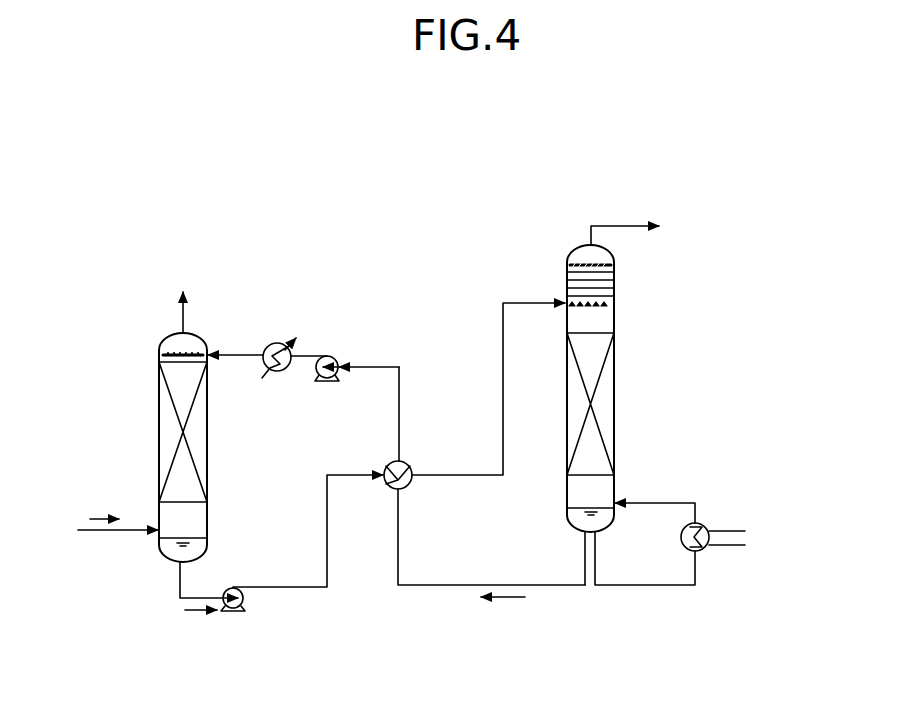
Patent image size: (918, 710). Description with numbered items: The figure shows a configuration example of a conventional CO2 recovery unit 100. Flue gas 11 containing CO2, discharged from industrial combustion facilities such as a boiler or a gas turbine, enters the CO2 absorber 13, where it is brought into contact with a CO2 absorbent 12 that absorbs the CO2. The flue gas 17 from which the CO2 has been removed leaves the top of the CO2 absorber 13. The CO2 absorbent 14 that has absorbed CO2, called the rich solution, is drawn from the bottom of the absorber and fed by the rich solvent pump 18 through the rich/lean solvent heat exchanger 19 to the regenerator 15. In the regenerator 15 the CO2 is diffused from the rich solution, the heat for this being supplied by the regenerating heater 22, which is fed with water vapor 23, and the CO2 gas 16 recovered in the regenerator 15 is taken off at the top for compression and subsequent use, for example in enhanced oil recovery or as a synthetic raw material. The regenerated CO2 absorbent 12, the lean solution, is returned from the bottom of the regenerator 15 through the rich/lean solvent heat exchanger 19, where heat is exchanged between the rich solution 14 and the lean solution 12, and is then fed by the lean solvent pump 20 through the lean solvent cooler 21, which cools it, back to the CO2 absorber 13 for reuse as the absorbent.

The CO2 recovery unit 100 is at (209, 184).
The flue gas 11 is at (92, 517).
The CO2 absorbent 12 is at (245, 354).
The CO2 absorber 13 is at (204, 333).
The CO2 absorbent having absorbed CO2 (rich solution) 14 is at (501, 338).
The regenerator 15 is at (578, 242).
The CO2 gas 16 is at (622, 225).
The flue gas 17 is at (181, 322).
The rich solvent pump 18 is at (233, 587).
The rich/lean solvent heat exchanger 19 is at (405, 461).
The lean solvent pump 20 is at (329, 356).
The lean solvent cooler 21 is at (287, 372).
The regenerating heater 22 is at (695, 523).
The water vapor 23 is at (736, 530).